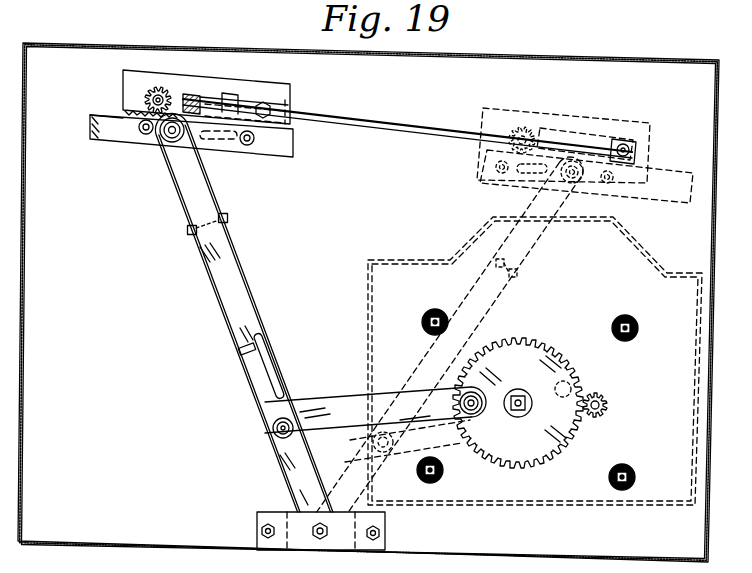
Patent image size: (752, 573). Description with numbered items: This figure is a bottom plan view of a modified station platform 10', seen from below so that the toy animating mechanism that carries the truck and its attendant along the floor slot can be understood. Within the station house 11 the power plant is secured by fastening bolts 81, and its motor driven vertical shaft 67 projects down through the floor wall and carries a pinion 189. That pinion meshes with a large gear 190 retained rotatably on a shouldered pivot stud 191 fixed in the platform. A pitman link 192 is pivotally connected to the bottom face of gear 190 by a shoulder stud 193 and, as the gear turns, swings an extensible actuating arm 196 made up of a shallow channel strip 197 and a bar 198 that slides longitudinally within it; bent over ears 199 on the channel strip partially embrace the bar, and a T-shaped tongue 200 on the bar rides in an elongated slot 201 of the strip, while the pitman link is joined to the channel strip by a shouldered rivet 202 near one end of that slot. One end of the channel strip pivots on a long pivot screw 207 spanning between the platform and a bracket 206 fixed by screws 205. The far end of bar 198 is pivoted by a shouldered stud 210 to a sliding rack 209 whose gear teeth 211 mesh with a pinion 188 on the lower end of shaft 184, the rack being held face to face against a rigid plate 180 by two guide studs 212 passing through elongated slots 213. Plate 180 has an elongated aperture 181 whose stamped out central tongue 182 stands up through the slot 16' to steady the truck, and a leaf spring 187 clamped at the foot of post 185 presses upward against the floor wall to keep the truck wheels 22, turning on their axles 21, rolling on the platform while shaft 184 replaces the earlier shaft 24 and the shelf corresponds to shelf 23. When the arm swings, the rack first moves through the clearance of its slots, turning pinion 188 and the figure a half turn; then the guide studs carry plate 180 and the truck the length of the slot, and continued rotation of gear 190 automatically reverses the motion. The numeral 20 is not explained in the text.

The station platform 10' is at (92, 449).
The station house 11 is at (636, 248).
The elongated slot 16' is at (409, 109).
The section line 20- 20 is at (43, 76).
The axles 21 is at (232, 501).
The truck wheels 22 is at (212, 411).
The support shelf 23 is at (160, 215).
The shaft 24 is at (210, 392).
The vertical shaft 67 is at (598, 394).
The fastening bolts 81 is at (429, 310).
The rigid plate 180 is at (275, 95).
The elongated aperture 181 is at (208, 100).
The central tongue 182 is at (188, 96).
The shaft 184 is at (150, 93).
The post 185 is at (278, 111).
The leaf spring 187 is at (262, 99).
The pinion 188 is at (143, 103).
The pinion 189 is at (603, 416).
The large gear 190 is at (540, 458).
The pivot stud 191 is at (518, 414).
The pitman link 192 is at (348, 410).
The shoulder stud 193 is at (475, 392).
The extensible actuating arm 196 is at (262, 306).
The channel strip 197 is at (277, 466).
The bar 198 is at (233, 296).
The bent over ears 199 is at (192, 236).
The T-shaped tongue 200 is at (245, 350).
The elongated slot 201 is at (283, 384).
The shouldered rivet 202 is at (276, 436).
The screws 205 is at (270, 539).
The bracket 206 is at (297, 512).
The pivot screw 207 is at (320, 540).
The sliding rack 209 is at (108, 137).
The shouldered stud 210 is at (172, 143).
The gear teeth 211 is at (112, 117).
The guide studs 212 is at (145, 134).
The elongated slots 213 is at (102, 132).